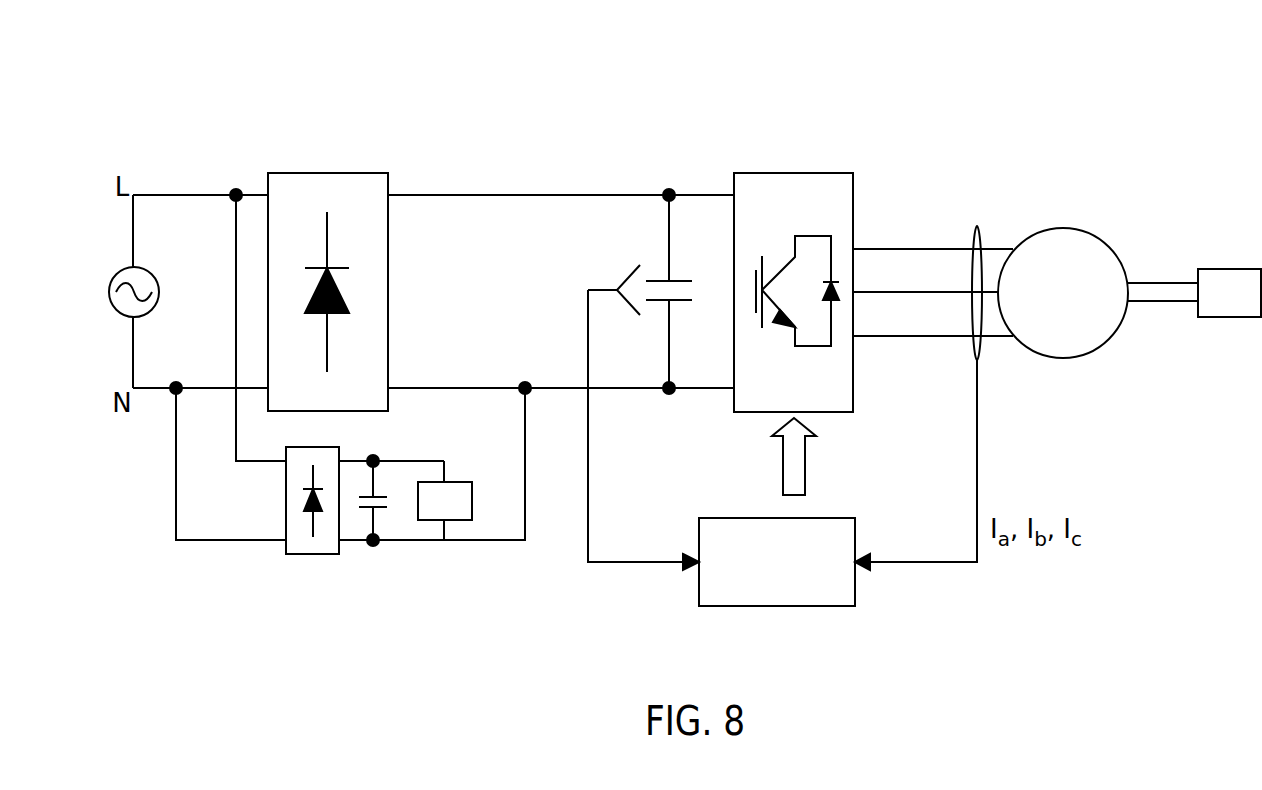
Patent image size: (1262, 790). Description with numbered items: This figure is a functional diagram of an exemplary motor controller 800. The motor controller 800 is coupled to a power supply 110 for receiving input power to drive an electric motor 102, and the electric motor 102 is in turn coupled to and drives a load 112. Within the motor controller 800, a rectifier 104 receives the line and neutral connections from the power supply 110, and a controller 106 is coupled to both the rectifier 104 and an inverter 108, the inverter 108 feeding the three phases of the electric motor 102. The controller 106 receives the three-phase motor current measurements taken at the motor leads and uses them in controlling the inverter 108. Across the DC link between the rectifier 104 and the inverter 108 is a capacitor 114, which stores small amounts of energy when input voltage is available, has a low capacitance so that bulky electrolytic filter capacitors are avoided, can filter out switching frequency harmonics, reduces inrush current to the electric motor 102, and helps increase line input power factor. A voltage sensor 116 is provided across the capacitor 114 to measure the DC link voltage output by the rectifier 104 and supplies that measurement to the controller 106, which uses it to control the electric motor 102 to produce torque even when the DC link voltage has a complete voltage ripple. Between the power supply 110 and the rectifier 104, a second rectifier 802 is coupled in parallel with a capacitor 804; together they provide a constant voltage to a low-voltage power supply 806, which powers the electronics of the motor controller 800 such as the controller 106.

The motor controller 800 is at (1010, 90).
The power supply 110 is at (111, 282).
The rectifier 104 is at (302, 173).
The second rectifier 802 is at (286, 500).
The capacitor 804 is at (386, 496).
The low-voltage power supply 806 is at (458, 482).
The capacitor 114 is at (651, 276).
The voltage sensor 116 is at (643, 562).
The inverter 108 is at (778, 173).
The controller 106 is at (732, 518).
The electric motor 102 is at (1056, 342).
The load 112 is at (1213, 305).